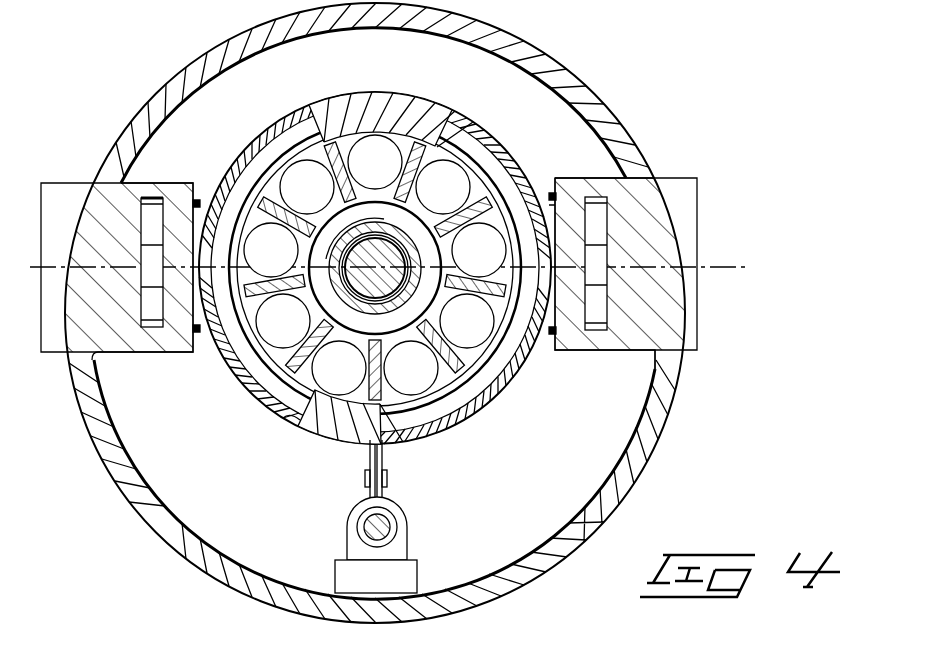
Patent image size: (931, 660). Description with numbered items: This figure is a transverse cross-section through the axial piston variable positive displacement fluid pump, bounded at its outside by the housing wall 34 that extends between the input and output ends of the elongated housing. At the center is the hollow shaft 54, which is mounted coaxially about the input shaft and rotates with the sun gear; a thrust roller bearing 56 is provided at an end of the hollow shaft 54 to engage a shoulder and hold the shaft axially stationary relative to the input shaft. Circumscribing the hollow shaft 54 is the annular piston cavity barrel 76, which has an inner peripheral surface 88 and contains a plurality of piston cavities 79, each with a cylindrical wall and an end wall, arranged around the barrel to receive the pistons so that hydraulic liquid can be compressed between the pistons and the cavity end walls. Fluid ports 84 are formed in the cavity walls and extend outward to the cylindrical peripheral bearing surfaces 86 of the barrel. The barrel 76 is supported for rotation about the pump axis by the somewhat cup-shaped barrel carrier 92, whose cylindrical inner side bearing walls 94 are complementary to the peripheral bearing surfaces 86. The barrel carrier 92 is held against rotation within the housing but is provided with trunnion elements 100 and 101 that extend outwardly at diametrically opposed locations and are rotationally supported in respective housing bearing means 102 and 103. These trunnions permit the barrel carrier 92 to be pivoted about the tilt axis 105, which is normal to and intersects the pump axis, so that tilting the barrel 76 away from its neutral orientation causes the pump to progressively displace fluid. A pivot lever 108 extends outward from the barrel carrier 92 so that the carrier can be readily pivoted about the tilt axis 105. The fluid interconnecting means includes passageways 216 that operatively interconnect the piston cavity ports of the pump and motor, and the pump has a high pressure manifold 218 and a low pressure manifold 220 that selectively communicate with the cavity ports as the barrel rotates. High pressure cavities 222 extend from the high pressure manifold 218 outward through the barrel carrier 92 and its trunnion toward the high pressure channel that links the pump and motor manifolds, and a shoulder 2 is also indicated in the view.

The shoulder 2 is at (590, 352).
The housing wall 34 is at (460, 30).
The hollow shaft 54 is at (396, 284).
The thrust roller bearing 56 is at (372, 238).
The annular piston cavity barrel 76 is at (350, 100).
The piston cavities 79 is at (296, 250).
The fluid ports 84 is at (432, 118).
The cylindrical peripheral bearing surfaces 86 is at (285, 130).
The inner peripheral surfaces 88 is at (372, 310).
The barrel carrier 92 is at (290, 416).
The cylindrical inner side bearing walls 94 is at (395, 100).
The trunnion element 100 is at (206, 190).
The trunnion element 101 is at (552, 185).
The housing bearing means 102 is at (70, 182).
The housing bearing means 103 is at (693, 180).
The tilt axis 105 is at (722, 258).
The pivot lever 108 is at (386, 468).
The passageways 216 is at (152, 332).
The high pressure manifold 218 is at (225, 342).
The low pressure manifold 220 is at (492, 162).
The high pressure cavities 222 is at (152, 195).